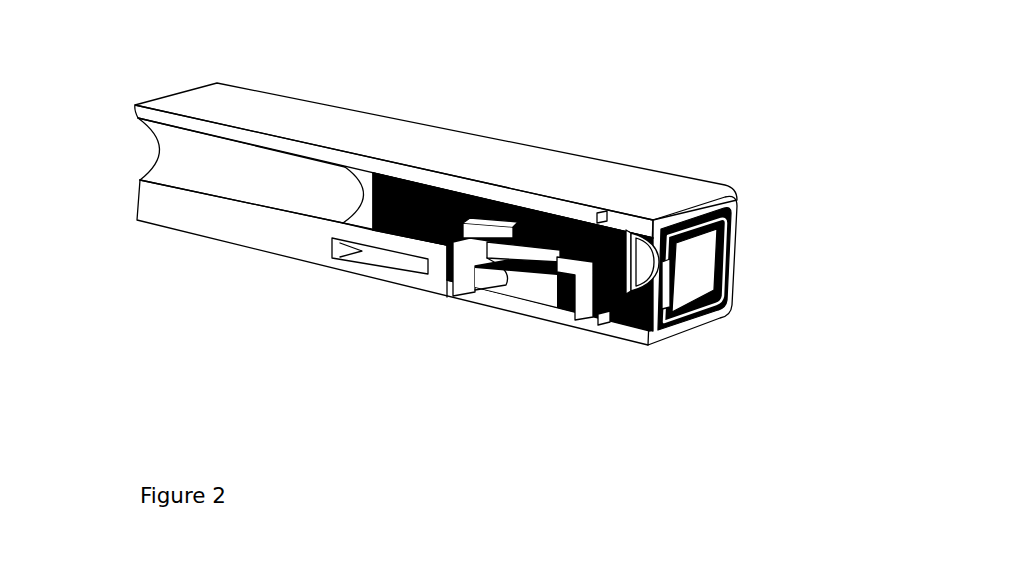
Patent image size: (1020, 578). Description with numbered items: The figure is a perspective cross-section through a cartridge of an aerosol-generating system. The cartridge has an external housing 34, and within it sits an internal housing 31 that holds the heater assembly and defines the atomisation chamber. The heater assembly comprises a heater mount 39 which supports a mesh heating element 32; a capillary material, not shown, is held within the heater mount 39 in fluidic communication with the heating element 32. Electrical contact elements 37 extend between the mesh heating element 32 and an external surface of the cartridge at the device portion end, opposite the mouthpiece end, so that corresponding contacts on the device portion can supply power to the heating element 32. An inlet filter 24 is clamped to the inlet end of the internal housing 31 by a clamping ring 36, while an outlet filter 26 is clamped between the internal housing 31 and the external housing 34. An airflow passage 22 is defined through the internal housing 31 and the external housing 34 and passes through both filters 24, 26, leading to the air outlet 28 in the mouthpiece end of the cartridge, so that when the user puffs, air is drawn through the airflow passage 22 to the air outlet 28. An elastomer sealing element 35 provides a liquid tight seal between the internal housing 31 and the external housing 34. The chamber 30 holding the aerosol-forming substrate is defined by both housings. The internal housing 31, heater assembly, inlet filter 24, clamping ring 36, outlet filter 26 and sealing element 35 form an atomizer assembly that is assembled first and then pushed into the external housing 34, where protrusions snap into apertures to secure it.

The airflow passage 22 is at (322, 188).
The inlet filter 24 is at (624, 264).
The outlet filter 26 is at (383, 207).
The air outlet 28 is at (150, 152).
The chamber 30 is at (377, 258).
The internal housing 31 is at (606, 279).
The mesh heating element 32 is at (537, 245).
The external housing 34 is at (650, 183).
The elastomer sealing element 35 is at (604, 321).
The clamping ring 36 is at (650, 267).
The electrical contact elements 37 is at (697, 278).
The heater mount 39 is at (466, 266).